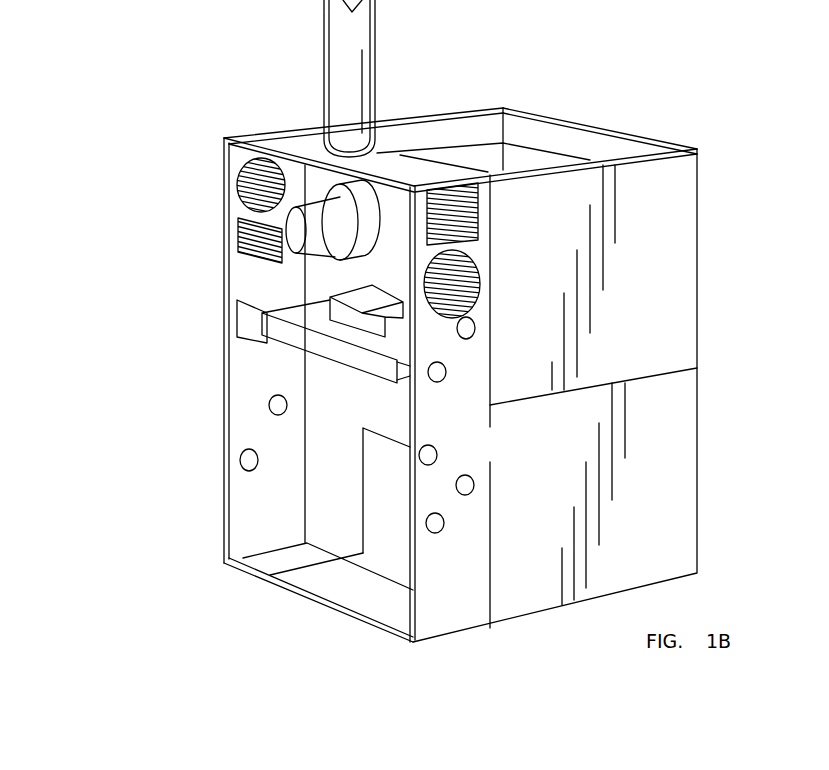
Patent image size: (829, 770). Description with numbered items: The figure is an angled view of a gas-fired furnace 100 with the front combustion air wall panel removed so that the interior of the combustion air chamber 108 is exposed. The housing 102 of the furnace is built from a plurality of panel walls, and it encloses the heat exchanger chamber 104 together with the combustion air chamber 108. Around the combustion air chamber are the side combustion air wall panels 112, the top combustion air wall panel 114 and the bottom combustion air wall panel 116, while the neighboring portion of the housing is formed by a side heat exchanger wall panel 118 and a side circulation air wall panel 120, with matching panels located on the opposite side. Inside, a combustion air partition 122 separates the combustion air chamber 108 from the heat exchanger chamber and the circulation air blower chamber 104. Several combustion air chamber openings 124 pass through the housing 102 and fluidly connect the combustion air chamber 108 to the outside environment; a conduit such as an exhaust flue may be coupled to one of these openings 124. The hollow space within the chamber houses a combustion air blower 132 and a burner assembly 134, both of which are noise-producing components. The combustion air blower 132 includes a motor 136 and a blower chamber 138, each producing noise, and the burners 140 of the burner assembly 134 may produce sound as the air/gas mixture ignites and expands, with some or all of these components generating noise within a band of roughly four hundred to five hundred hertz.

The gas-fired furnace 100 is at (548, 80).
The housing 102 is at (295, 132).
The heat exchanger chamber 104 is at (572, 142).
The combustion air chamber 108 is at (240, 560).
The side combustion air wall panels 112 is at (347, 149).
The top combustion air wall panel 114 is at (388, 167).
The bottom combustion air wall panel 116 is at (328, 582).
The side heat exchanger wall panel 118 is at (683, 248).
The side circulation air wall panel 120 is at (668, 478).
The combustion air partition 122 is at (323, 518).
The combustion air chamber openings 124 is at (326, 78).
The combustion air blower 132 is at (265, 274).
The burner assembly 134 is at (331, 381).
The motor 136 is at (300, 247).
The blower chamber 138 is at (445, 293).
The burners 140 is at (413, 372).